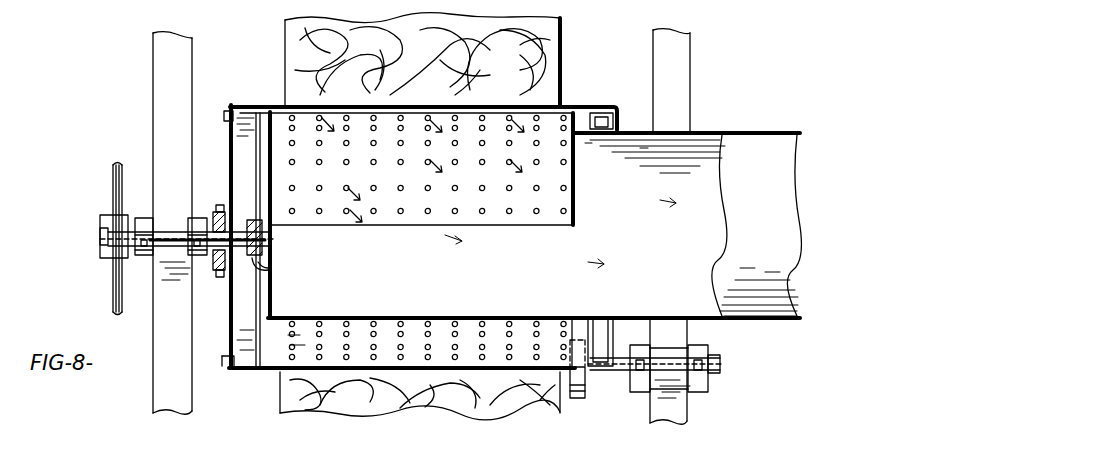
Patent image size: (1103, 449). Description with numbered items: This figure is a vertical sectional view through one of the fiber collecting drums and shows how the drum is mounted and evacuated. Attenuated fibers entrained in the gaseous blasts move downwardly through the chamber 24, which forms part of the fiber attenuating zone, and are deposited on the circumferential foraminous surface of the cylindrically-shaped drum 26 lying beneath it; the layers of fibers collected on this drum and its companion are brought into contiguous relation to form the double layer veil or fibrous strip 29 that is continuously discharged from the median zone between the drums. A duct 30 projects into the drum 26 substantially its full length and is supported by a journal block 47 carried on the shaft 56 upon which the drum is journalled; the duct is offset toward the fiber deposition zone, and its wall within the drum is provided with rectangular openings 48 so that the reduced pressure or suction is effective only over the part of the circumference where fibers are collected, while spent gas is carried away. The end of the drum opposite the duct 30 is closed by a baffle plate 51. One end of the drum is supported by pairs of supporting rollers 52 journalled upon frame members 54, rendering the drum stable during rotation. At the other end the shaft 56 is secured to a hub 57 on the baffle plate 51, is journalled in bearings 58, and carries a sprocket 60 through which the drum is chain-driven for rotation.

The chamber 24 is at (566, 32).
The drum 26 is at (270, 372).
The fibrous strip 29 is at (292, 408).
The duct 30 is at (732, 138).
The journal block 47 is at (262, 270).
The rectangular openings 48 is at (382, 226).
The baffle plate 51 is at (228, 138).
The supporting rollers 52 is at (576, 399).
The frame member 54 is at (158, 116).
The shaft 56 is at (263, 242).
The hub 57 is at (215, 270).
The bearings 58 is at (197, 218).
The sprocket 60 is at (112, 285).